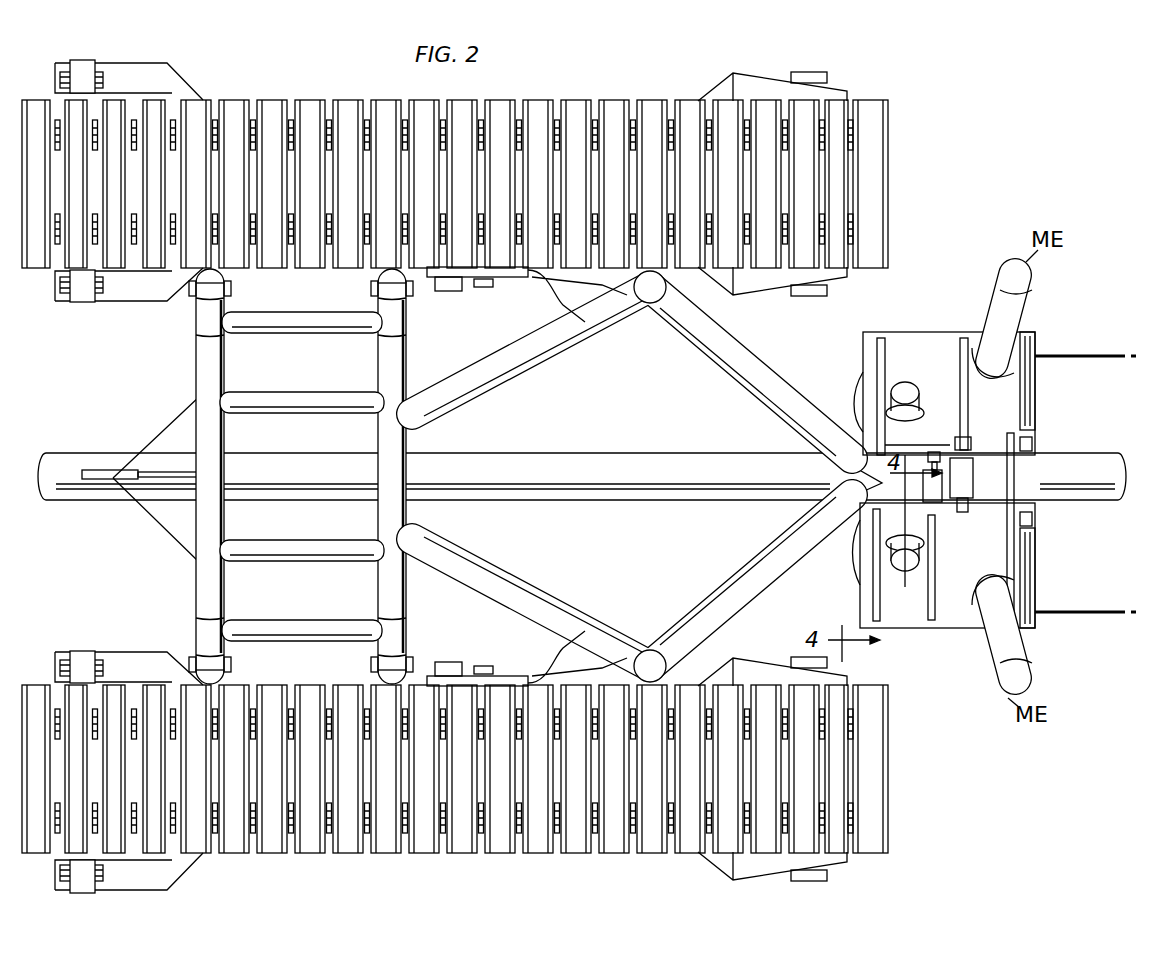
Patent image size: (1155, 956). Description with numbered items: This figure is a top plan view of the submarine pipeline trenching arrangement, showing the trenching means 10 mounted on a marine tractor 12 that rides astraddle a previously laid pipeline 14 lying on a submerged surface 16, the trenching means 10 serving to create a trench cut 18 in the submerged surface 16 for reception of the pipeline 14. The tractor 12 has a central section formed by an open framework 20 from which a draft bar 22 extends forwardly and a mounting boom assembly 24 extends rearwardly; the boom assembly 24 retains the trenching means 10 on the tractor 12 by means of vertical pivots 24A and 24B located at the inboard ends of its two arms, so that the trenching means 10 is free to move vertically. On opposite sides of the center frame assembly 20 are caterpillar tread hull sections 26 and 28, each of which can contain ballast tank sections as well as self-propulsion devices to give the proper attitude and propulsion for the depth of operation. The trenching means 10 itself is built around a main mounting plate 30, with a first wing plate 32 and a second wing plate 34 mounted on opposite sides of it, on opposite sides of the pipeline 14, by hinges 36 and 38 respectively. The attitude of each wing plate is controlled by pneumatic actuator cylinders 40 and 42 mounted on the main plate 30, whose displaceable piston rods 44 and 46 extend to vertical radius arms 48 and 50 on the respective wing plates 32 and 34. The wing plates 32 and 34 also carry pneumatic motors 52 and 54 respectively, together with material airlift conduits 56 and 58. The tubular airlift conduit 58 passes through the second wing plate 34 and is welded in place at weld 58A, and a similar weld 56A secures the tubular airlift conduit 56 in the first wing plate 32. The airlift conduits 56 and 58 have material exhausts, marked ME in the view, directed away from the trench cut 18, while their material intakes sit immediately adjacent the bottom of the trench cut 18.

The trenching means 10 is at (892, 318).
The marine tractor 12 is at (188, 318).
The pipeline 14 is at (548, 455).
The submerged surface 16 is at (1079, 356).
The trench cut 18 is at (1108, 556).
The open framework 20 is at (285, 403).
The draft bar 22 is at (100, 480).
The mounting boom assembly 24 is at (724, 353).
The vertical pivot 24A is at (448, 292).
The vertical pivot 24B is at (452, 658).
The caterpillar tread hull section 26 is at (896, 194).
The caterpillar tread hull section 28 is at (892, 795).
The main mounting plate 30 is at (1004, 498).
The first wing plate 32 is at (932, 359).
The second wing plate 34 is at (972, 589).
The hinge 36 is at (1034, 447).
The hinge 38 is at (1034, 517).
The pneumatic actuator cylinder 40 is at (971, 470).
The pneumatic actuator cylinder 42 is at (914, 472).
The piston rod 44 is at (965, 448).
The piston rod 46 is at (940, 516).
The vertical radius arm 48 is at (966, 384).
The vertical radius arm 50 is at (937, 564).
The pneumatic motor 52 is at (909, 393).
The pneumatic motor 54 is at (906, 568).
The material airlift conduit 56 is at (1030, 318).
The weld 56A is at (985, 350).
The material airlift conduit 58 is at (978, 652).
The weld 58A is at (1030, 578).